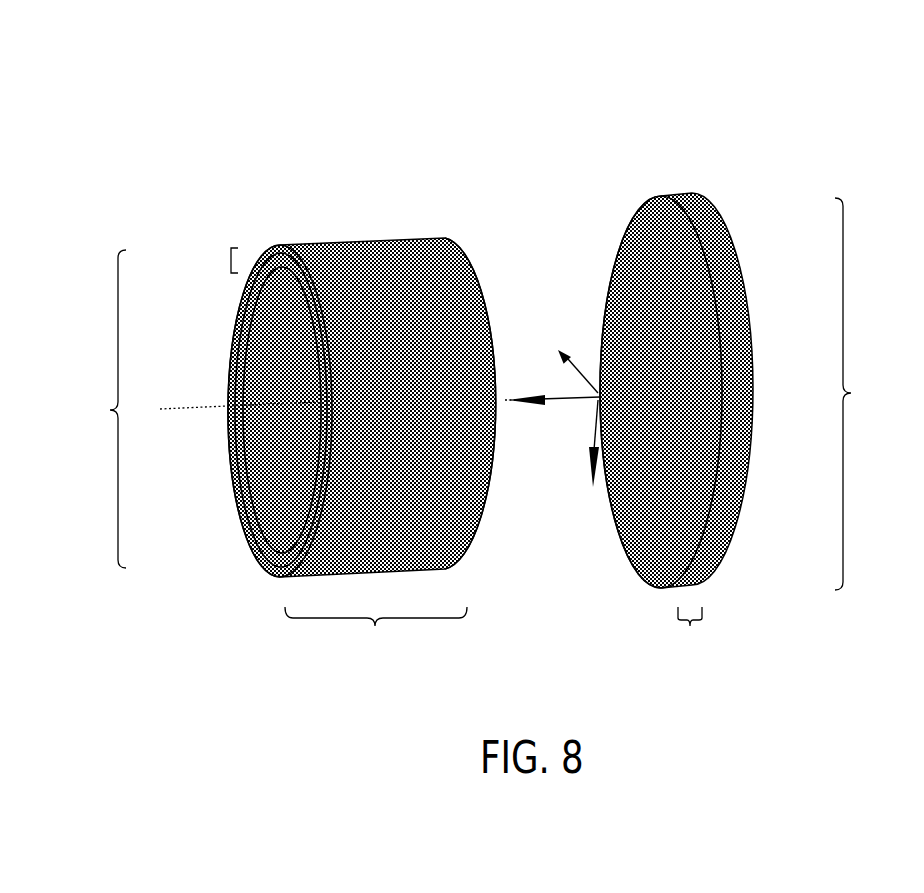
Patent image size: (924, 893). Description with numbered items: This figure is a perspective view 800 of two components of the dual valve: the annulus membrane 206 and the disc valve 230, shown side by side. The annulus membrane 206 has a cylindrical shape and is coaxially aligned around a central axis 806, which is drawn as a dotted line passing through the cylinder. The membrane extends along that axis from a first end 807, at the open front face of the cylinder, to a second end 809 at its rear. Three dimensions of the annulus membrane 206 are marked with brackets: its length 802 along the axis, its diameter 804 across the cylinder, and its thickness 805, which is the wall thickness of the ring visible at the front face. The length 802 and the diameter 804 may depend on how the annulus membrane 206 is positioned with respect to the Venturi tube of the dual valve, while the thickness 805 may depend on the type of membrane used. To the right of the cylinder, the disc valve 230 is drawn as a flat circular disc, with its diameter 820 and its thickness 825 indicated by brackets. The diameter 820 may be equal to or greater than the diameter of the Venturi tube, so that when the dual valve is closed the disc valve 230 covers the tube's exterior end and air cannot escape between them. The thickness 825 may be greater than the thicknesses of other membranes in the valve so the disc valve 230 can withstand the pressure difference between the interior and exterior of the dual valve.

The perspective view 800 is at (822, 78).
The annulus membrane 206 is at (348, 196).
The disc valve 230 is at (733, 165).
The second end 809 is at (479, 202).
The first end 807 is at (230, 212).
The thickness 805 is at (230, 260).
The diameter 804 is at (109, 410).
The central axis 806 is at (197, 405).
The length 802 is at (375, 626).
The diameter 820 is at (851, 393).
The thickness 825 is at (690, 626).